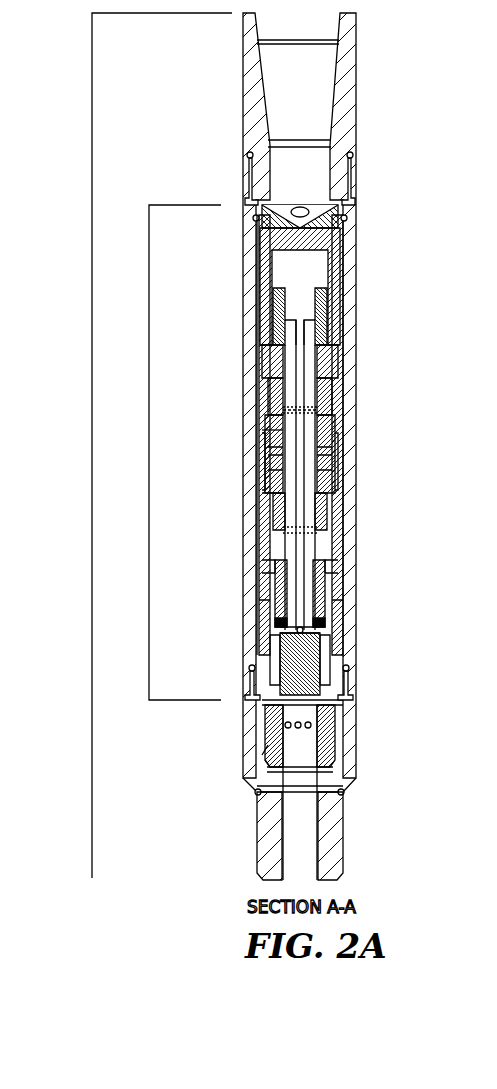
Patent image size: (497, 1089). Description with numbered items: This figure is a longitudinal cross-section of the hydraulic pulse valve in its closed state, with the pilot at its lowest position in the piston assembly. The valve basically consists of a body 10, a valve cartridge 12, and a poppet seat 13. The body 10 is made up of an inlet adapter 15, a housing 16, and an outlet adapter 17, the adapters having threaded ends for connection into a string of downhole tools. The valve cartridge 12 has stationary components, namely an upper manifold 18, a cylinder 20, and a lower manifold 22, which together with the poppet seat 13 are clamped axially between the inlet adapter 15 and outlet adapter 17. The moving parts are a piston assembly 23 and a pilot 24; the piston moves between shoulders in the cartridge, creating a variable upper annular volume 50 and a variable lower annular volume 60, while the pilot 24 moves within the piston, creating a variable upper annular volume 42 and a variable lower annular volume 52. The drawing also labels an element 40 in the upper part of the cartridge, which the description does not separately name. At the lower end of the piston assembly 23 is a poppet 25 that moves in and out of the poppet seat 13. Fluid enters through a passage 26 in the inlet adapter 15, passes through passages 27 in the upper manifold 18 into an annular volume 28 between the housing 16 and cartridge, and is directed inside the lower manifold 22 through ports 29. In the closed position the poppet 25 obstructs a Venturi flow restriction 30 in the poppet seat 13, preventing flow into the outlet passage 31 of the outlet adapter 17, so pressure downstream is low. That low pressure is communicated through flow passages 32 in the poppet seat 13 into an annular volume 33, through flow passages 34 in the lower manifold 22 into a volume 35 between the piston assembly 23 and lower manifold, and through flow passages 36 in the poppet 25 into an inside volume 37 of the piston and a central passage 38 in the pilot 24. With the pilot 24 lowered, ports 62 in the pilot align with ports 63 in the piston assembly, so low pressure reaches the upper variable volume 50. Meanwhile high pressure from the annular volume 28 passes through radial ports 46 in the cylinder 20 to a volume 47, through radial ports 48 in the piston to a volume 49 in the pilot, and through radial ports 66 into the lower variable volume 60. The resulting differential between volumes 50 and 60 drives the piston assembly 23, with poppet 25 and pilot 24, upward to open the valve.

The body 10 is at (88, 441).
The valve cartridge 12 is at (147, 322).
The poppet seat 13 is at (285, 727).
The inlet adapter 15 is at (243, 150).
The housing 16 is at (243, 200).
The outlet adapter 17 is at (264, 746).
The upper manifold 18 is at (258, 323).
The cylinder 20 is at (263, 395).
The lower manifold 22 is at (262, 620).
The piston assembly 23 is at (262, 430).
The pilot 24 is at (264, 470).
The poppet 25 is at (262, 688).
The passage 26 is at (298, 160).
The passages 27 is at (347, 218).
The annular volume 28 is at (340, 315).
The ports 29 is at (262, 672).
The Venturi flow restriction 30 is at (345, 783).
The outlet passage 31 is at (306, 818).
The flow passages 32 is at (338, 732).
The annular volume 33 is at (334, 715).
The flow passages 34 is at (343, 676).
The volume 35 is at (322, 618).
The flow passages 36 is at (304, 630).
The inside volume 37 is at (322, 636).
The central passage 38 is at (301, 518).
The upper body 40 is at (310, 262).
The variable upper annular volume 42 is at (318, 345).
The radial ports 46 is at (332, 432).
The volume 47 is at (332, 450).
The radial ports 48 is at (330, 460).
The volume 49 is at (330, 478).
The variable upper annular volume 50 is at (306, 383).
The variable lower annular volume 52 is at (322, 566).
The variable lower annular volume 60 is at (330, 492).
The ports 62 is at (312, 407).
The ports 63 is at (306, 413).
The radial ports 66 is at (330, 514).